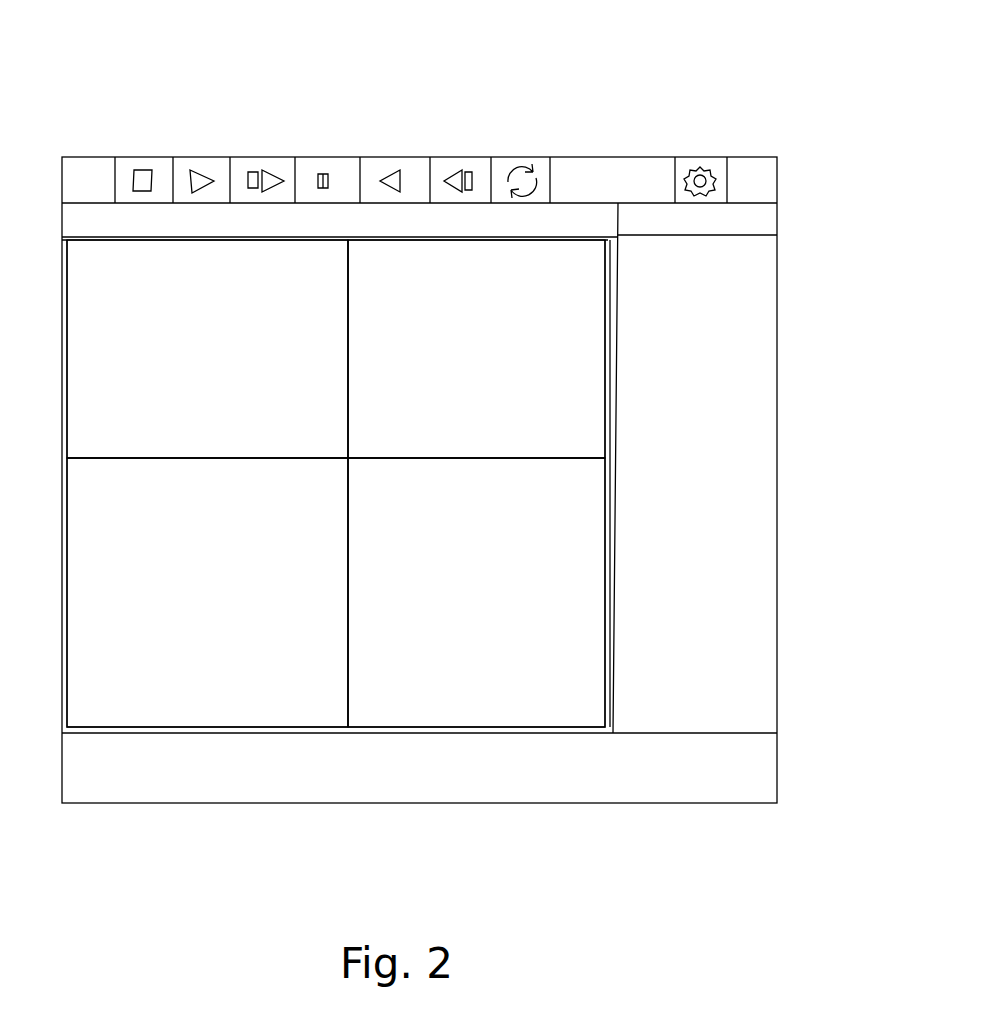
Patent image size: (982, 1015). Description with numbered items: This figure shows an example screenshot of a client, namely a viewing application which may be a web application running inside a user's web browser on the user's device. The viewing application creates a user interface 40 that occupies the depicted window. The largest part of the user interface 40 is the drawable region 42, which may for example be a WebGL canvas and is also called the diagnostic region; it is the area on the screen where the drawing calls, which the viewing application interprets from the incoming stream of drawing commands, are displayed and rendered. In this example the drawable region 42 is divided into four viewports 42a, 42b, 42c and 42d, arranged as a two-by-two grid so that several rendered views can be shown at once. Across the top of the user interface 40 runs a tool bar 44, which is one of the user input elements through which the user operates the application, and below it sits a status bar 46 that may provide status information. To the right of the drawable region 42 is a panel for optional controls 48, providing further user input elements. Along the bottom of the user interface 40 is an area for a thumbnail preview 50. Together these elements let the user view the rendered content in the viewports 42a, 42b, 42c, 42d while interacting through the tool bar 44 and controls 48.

The user interface 40 is at (609, 78).
The drawable region 42 is at (62, 693).
The viewport 42a is at (207, 349).
The viewport 42b is at (476, 349).
The viewport 42c is at (207, 592).
The viewport 42d is at (476, 592).
The tool bar 44 is at (193, 157).
The status bar 46 is at (298, 224).
The controls 48 is at (698, 380).
The area for a thumbnail preview 50 is at (227, 775).